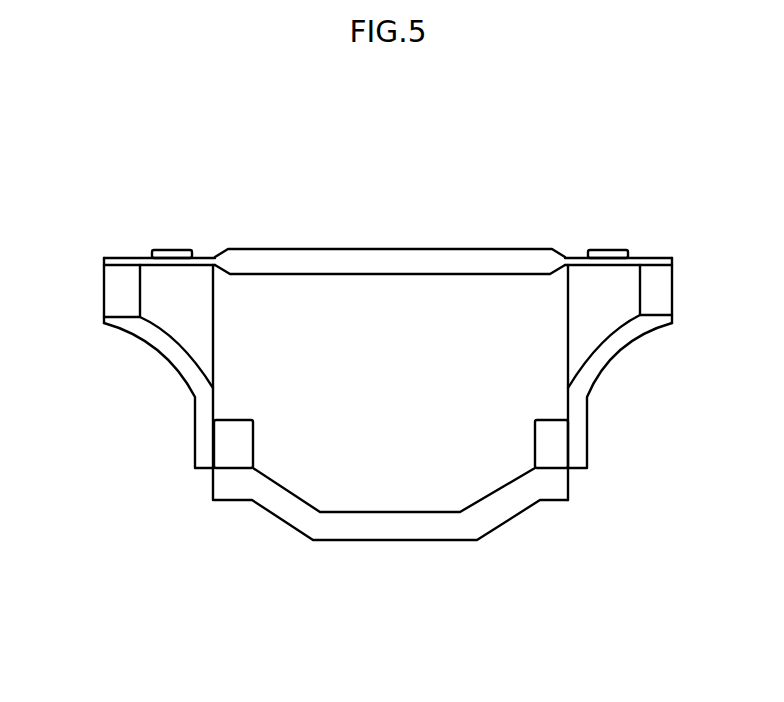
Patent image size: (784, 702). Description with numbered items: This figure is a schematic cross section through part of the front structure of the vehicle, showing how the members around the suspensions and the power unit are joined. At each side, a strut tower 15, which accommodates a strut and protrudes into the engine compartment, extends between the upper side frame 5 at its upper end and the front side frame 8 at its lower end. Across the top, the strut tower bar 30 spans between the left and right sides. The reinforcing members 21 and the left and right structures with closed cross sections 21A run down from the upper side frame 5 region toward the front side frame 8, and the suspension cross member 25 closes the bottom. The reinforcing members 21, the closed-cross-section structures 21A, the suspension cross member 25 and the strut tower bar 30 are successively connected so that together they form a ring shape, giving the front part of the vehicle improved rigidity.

The upper side frame 5 is at (103, 277).
The strut tower bar 30 is at (382, 249).
The strut tower 15 is at (214, 332).
The reinforcing member 21 is at (153, 346).
The structure with closed cross section 21A is at (197, 377).
The front side frame 8 is at (253, 440).
The suspension cross member 25 is at (405, 540).